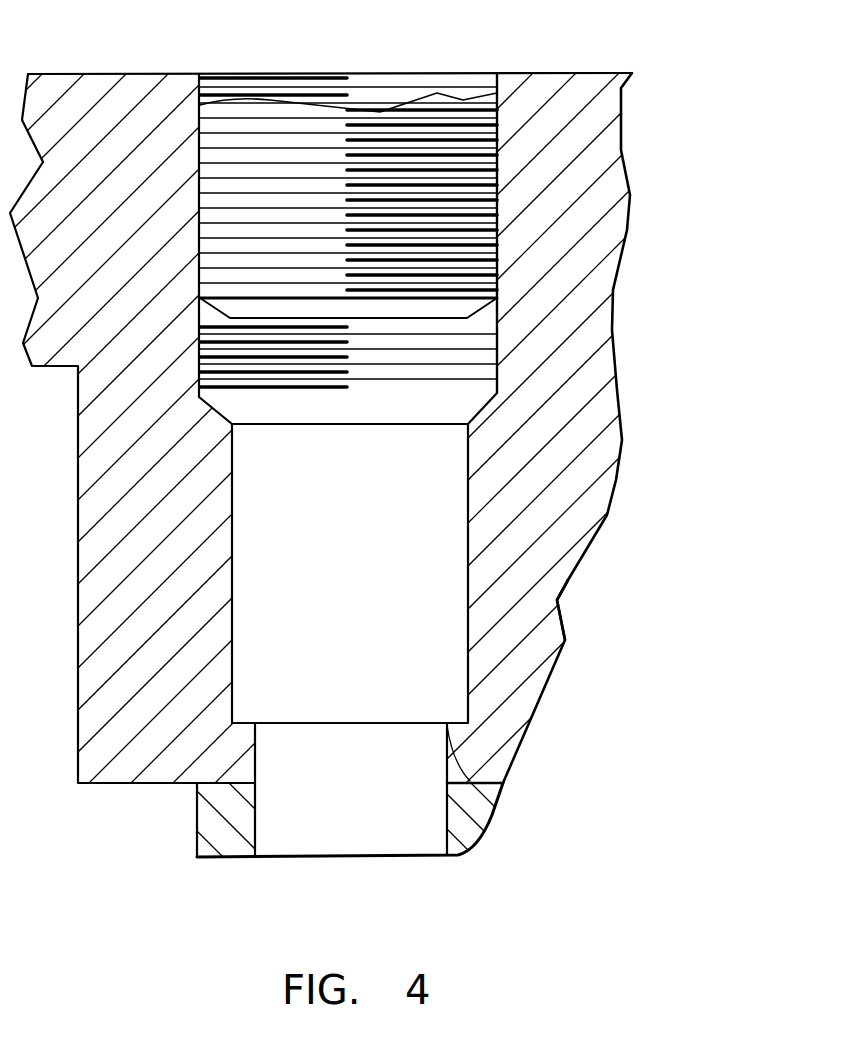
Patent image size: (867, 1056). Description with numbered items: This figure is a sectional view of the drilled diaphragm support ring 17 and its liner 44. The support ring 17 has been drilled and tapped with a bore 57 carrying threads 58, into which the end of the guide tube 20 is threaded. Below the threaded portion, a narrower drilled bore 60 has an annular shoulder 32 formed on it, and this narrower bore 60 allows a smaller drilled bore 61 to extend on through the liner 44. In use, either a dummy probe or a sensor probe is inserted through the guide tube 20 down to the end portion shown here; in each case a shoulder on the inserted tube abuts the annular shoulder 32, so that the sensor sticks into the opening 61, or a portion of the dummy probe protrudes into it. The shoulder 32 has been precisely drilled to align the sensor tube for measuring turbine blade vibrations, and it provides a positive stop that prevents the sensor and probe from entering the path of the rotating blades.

The diaphragm support ring 17 is at (85, 573).
The guide tube 20 is at (263, 128).
The bore 57 is at (465, 88).
The threads 58 is at (493, 173).
The narrower drilled bore 60 is at (468, 620).
The smaller drilled bore 61 is at (388, 843).
The liner 44 is at (233, 848).
The annular shoulder 32 is at (487, 803).